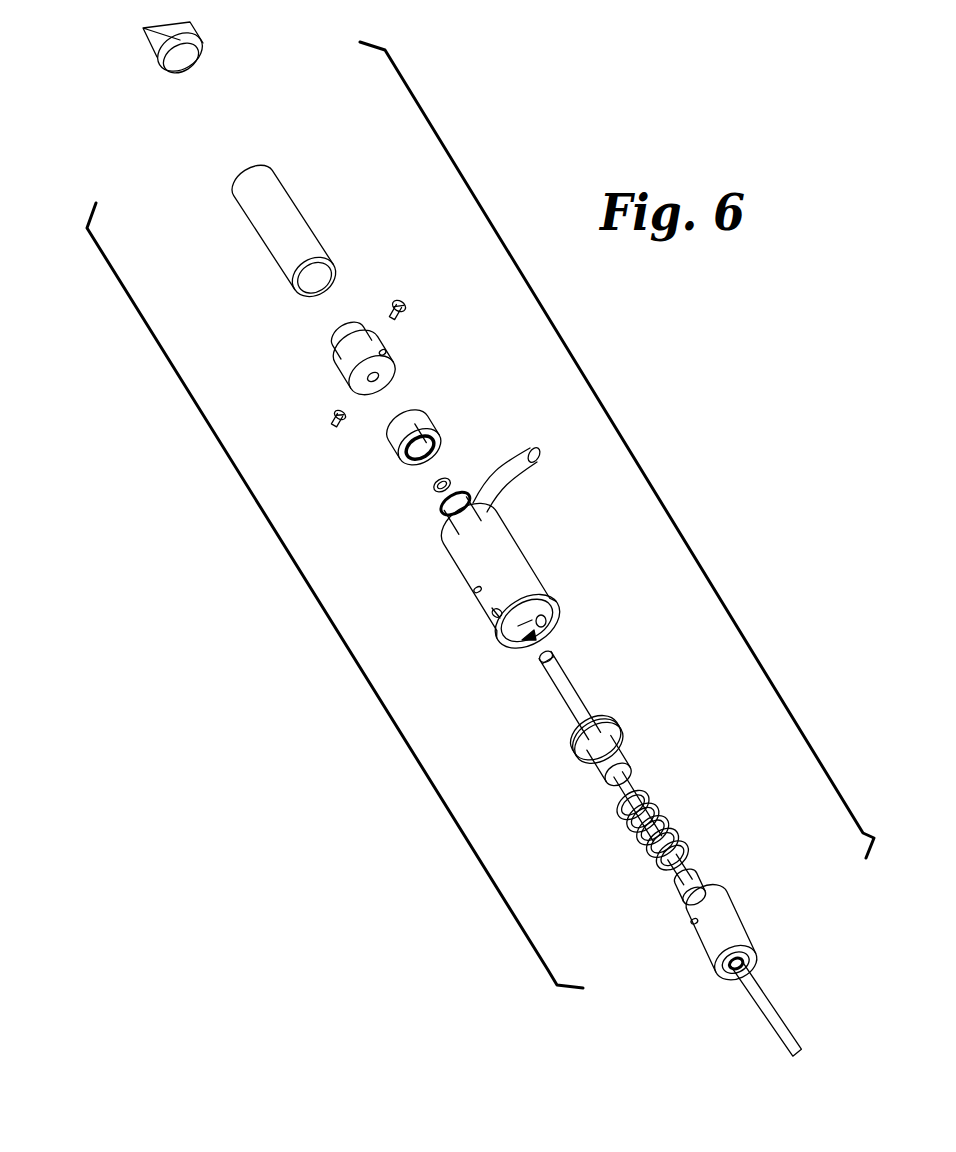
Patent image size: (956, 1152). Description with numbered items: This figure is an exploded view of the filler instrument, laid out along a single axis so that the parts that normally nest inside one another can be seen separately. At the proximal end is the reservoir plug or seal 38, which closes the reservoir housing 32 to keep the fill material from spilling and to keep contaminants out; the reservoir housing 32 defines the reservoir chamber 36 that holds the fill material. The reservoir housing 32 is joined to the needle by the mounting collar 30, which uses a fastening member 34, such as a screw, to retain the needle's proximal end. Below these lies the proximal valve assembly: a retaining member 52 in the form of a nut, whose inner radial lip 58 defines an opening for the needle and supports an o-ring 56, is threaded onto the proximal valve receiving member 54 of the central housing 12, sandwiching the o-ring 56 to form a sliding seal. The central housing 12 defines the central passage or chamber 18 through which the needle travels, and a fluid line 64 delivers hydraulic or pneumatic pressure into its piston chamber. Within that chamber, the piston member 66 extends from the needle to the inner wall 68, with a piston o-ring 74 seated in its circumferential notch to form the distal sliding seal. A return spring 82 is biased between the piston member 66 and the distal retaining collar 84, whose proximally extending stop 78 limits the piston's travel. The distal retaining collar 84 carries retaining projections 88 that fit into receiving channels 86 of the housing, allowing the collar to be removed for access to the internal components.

The central housing 12 is at (762, 989).
The central passage or chamber 18 is at (542, 592).
The mounting collar 30 is at (335, 355).
The reservoir housing 32 is at (307, 213).
The fastening member 34 is at (400, 310).
The reservoir chamber 36 is at (330, 283).
The reservoir plug or seal 38 is at (147, 47).
The retaining member 52 is at (445, 440).
The proximal valve receiving member 54 is at (440, 503).
The o-ring 56 is at (453, 480).
The inner radial lip 58 is at (390, 437).
The fluid line 64 is at (503, 493).
The piston member 66 is at (607, 718).
The inner wall 68 is at (557, 620).
The piston o-ring 74 is at (570, 742).
The stop 78 is at (700, 890).
The return spring 82 is at (667, 818).
The distal retaining collar 84 is at (733, 923).
The receiving channel 86 is at (493, 608).
The retaining projection 88 is at (685, 921).